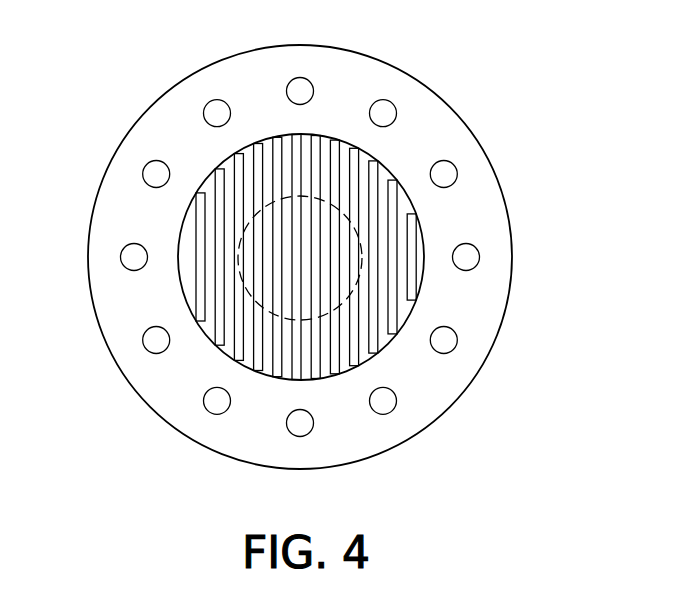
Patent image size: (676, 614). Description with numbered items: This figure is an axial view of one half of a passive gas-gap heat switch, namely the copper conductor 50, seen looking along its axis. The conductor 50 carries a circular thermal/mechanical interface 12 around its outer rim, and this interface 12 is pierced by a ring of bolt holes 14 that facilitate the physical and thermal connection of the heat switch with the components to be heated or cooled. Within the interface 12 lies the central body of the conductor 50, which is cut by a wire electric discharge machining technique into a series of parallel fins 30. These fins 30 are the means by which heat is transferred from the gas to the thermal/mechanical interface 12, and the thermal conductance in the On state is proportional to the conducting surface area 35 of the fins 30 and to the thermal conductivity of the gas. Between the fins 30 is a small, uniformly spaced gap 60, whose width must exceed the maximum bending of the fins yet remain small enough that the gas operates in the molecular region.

The thermal/mechanical interface 12 is at (135, 372).
The bolt holes 14 is at (217, 404).
The fins 30 is at (348, 142).
The surface area 35 is at (383, 165).
The copper conductor 50 is at (180, 295).
The gap 60 is at (375, 156).